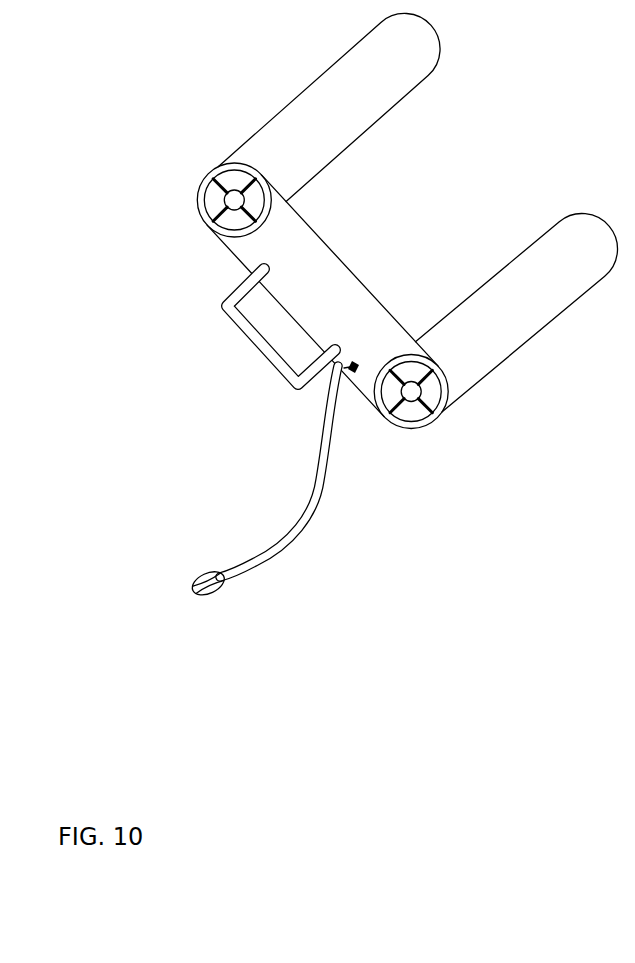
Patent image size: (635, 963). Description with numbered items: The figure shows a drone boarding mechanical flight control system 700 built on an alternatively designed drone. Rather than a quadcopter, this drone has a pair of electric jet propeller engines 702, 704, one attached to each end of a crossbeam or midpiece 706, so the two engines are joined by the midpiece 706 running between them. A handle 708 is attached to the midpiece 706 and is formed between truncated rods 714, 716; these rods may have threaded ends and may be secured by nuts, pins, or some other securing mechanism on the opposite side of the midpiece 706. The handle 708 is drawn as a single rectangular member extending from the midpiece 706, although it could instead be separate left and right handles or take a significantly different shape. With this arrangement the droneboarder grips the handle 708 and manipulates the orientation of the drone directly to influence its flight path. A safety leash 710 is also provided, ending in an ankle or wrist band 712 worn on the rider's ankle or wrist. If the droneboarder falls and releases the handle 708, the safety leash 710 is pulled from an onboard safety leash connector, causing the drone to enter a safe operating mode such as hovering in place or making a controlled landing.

The drone boarding mechanical flight control system 700 is at (369, 340).
The electric jet propeller engine 702 is at (310, 84).
The electric jet propeller engine 704 is at (494, 274).
The midpiece 706 is at (322, 240).
The handle 708 is at (240, 331).
The safety leash 710 is at (303, 521).
The ankle or wrist band 712 is at (197, 580).
The truncated rod 714 is at (243, 283).
The truncated rod 716 is at (311, 380).